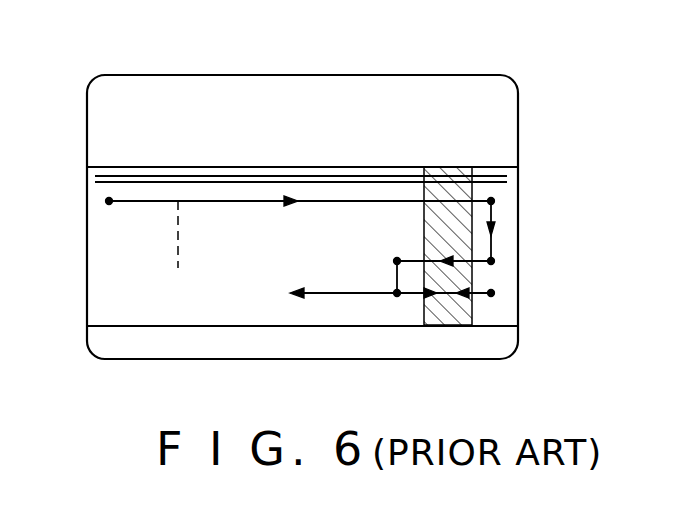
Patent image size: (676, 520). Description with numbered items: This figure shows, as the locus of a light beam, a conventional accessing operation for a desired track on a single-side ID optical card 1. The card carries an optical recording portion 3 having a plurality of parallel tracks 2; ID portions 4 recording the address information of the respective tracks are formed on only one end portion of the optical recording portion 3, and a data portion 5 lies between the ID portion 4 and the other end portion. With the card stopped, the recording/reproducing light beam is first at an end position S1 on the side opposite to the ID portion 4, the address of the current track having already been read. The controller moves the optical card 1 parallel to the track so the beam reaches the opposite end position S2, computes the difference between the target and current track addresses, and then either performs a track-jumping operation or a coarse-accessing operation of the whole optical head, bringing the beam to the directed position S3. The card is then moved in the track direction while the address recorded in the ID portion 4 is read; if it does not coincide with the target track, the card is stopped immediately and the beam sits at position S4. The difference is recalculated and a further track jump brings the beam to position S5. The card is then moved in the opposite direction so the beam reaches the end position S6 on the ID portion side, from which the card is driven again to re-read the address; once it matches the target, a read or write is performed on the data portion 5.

The optical card 1 is at (465, 73).
The parallel tracks 2 is at (155, 178).
The optical recording portion 3 is at (70, 168).
The ID portion 4 is at (472, 317).
The data portion 5 is at (137, 320).
The end position S1 is at (108, 201).
The end position S2 is at (491, 201).
The directed position of the light beam S3 is at (491, 261).
The position S4 is at (397, 261).
The position S5 is at (397, 293).
The end position S6 is at (491, 293).